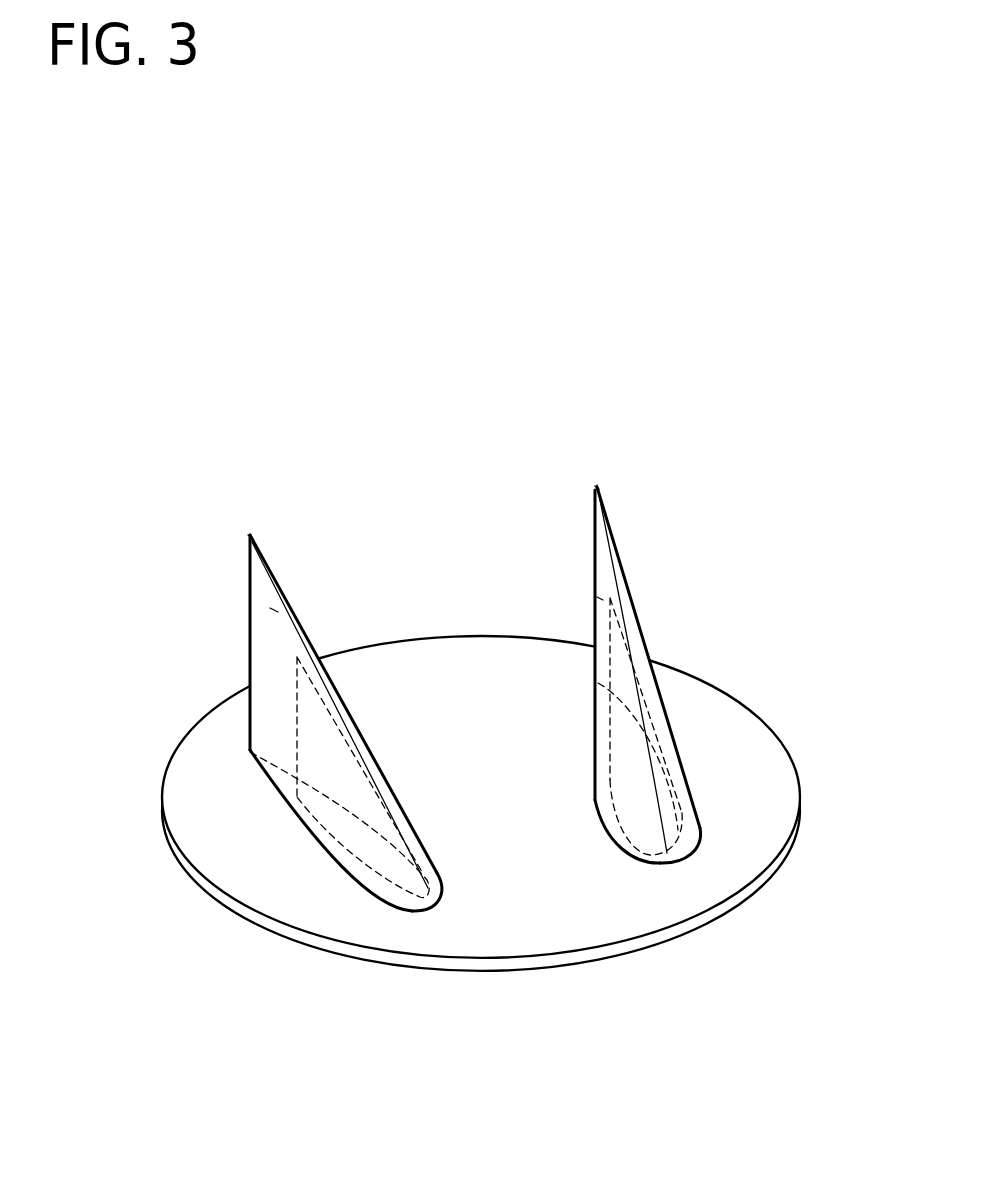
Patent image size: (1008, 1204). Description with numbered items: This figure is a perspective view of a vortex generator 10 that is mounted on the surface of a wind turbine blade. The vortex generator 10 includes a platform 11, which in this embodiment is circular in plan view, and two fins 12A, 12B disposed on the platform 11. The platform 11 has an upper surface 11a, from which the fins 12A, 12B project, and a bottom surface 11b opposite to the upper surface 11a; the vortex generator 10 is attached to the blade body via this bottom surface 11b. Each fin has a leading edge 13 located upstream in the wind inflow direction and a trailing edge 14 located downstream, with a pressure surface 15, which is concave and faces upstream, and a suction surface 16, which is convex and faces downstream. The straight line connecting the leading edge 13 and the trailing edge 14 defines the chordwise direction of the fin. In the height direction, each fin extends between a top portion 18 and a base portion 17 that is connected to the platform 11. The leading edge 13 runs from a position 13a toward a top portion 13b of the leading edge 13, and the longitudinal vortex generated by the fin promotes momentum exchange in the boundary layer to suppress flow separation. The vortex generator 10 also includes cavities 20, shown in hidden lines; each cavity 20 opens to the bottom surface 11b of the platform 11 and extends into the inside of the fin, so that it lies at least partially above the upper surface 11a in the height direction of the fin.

The vortex generator 10 is at (770, 452).
The platform 11 is at (481, 836).
The upper surface 11a is at (531, 923).
The bottom surface 11b is at (471, 925).
The fin 12A is at (605, 542).
The fin 12B is at (263, 547).
The leading edge 13 is at (335, 715).
The position of the leading edge 13a is at (425, 905).
The top portion of the leading edge 13b is at (250, 535).
The trailing edge 14 is at (250, 607).
The pressure surface 15 is at (272, 665).
The suction surface 16 is at (273, 607).
The base portion 17 is at (290, 813).
The top portion 18 is at (423, 512).
The cavity 20 is at (308, 742).